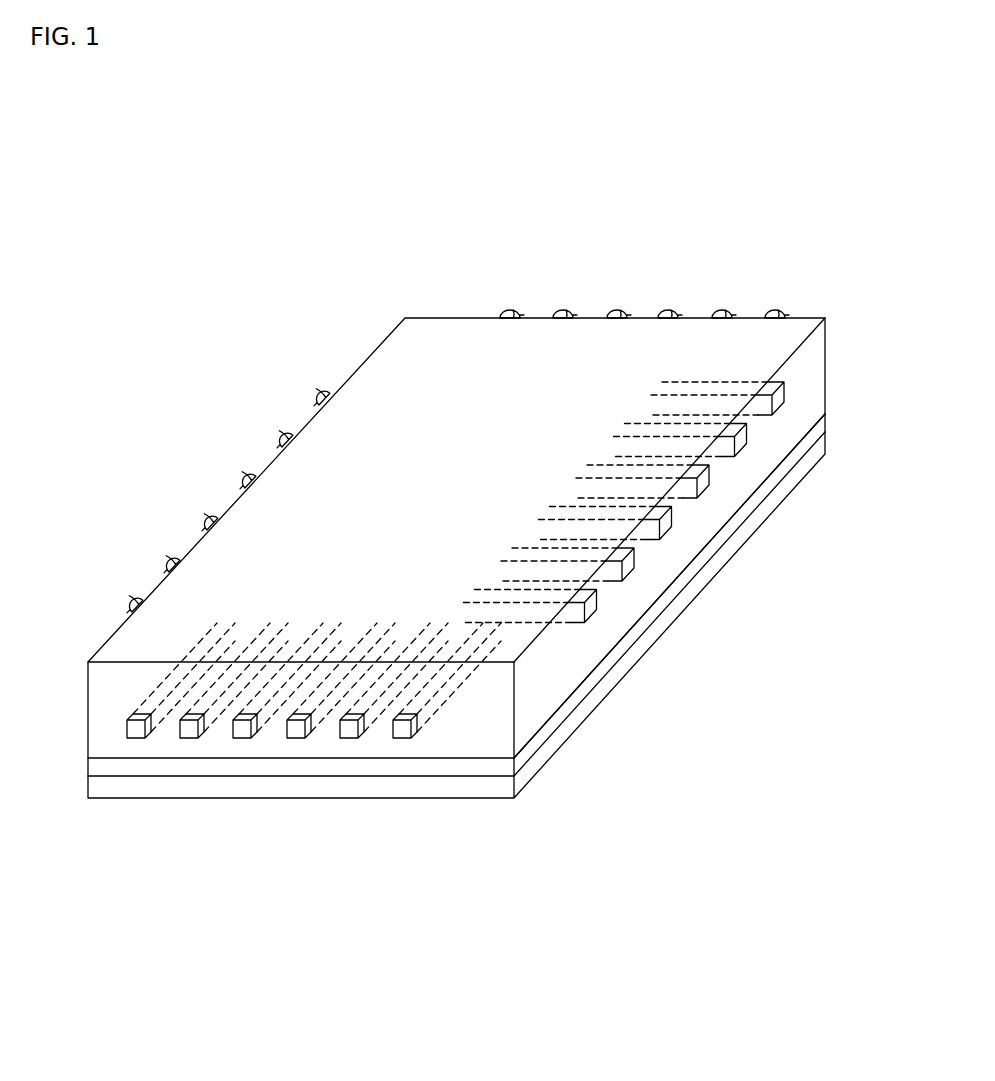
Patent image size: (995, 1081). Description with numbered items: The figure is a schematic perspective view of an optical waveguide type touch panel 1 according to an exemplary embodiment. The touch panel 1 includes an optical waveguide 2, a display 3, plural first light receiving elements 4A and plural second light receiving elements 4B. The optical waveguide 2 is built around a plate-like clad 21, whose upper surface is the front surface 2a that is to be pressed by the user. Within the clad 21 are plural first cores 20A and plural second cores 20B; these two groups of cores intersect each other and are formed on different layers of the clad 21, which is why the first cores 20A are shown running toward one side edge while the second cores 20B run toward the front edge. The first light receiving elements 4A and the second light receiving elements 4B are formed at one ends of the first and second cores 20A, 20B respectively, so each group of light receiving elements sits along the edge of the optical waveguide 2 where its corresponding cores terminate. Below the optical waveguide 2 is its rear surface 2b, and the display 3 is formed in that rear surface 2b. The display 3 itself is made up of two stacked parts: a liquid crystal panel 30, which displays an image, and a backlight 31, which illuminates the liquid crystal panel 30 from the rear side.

The optical waveguide type touch panel 1 is at (487, 526).
The optical waveguide 2 is at (487, 553).
The surface (front surface) 2a is at (748, 326).
The rear surface 2b is at (800, 448).
The display 3 is at (456, 659).
The liquid crystal panel 30 is at (478, 765).
The backlight 31 is at (451, 787).
The first light receiving elements 4A is at (312, 392).
The second light receiving elements 4B is at (554, 308).
The first cores 20A is at (738, 445).
The second cores 20B is at (192, 738).
The plate-like clad 21 is at (673, 540).